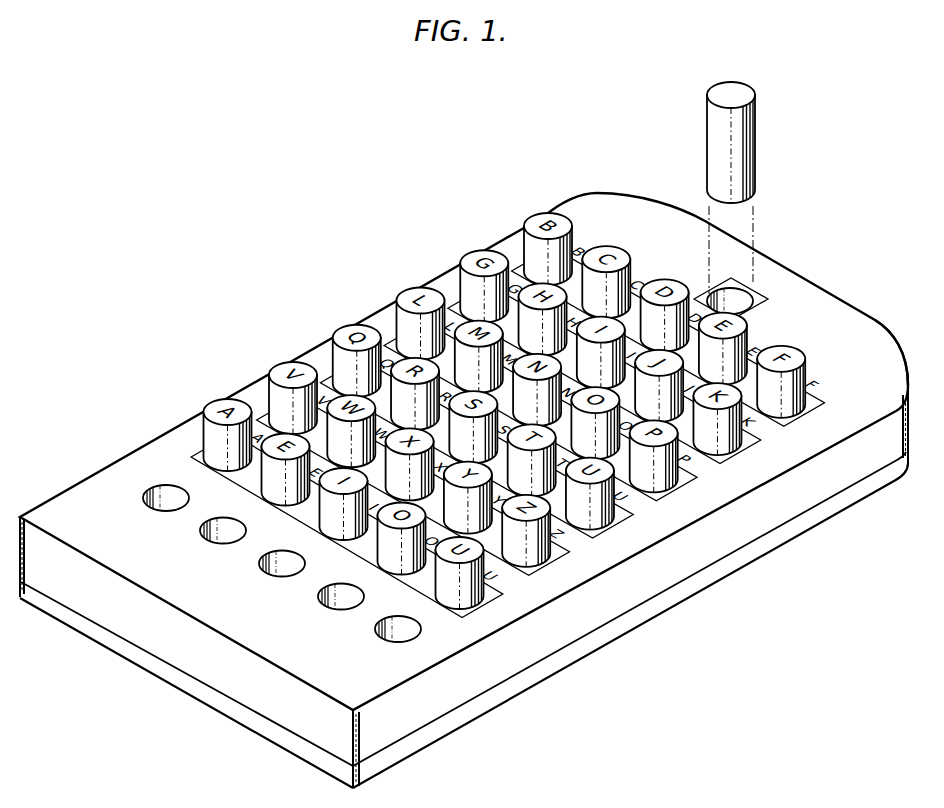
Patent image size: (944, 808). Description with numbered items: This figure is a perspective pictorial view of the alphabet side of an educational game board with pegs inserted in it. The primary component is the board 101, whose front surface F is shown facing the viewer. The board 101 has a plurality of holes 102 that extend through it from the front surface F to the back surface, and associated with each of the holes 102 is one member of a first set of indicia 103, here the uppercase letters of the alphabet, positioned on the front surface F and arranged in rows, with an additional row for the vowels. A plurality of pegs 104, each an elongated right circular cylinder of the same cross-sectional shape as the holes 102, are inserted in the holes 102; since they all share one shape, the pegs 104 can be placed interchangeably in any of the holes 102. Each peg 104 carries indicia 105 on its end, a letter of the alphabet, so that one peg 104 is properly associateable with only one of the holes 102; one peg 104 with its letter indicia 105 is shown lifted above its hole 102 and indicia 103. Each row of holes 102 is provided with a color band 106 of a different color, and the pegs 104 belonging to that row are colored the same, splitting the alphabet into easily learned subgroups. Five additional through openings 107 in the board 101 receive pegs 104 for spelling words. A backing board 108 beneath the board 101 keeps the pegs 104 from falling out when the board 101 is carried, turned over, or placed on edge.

The board 101 is at (849, 306).
The holes 102 is at (770, 298).
The first set of indicia 103 is at (760, 292).
The pegs 104 is at (755, 135).
The indicia on pegs 105 is at (736, 86).
The color bands 106 is at (800, 418).
The through openings 107 is at (419, 638).
The backing board 108 is at (447, 727).
The front surface F is at (868, 348).